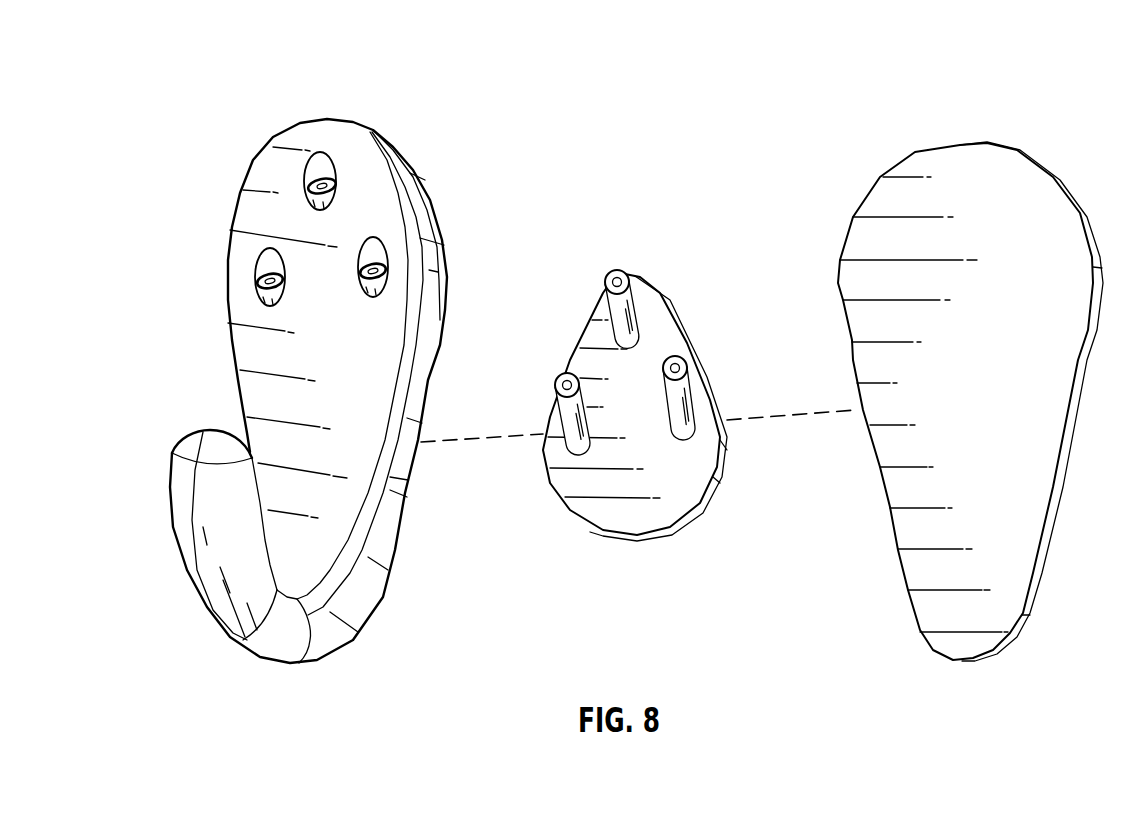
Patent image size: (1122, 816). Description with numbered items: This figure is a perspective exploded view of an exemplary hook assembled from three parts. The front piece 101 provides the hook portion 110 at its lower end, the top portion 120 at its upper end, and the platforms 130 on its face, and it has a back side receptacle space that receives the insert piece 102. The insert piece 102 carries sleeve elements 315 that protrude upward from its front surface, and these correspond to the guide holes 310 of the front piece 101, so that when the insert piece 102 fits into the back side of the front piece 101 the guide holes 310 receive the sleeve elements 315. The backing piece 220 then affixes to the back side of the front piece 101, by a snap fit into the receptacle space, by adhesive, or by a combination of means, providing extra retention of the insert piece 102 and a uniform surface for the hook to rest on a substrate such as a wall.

The front piece 101 is at (437, 223).
The insert piece 102 is at (633, 478).
The hook portion 110 is at (223, 587).
The top portion 120 is at (285, 138).
The platforms 130 is at (310, 200).
The backing piece 220 is at (973, 163).
The guide holes 310 is at (318, 172).
The sleeve elements 315 is at (630, 303).